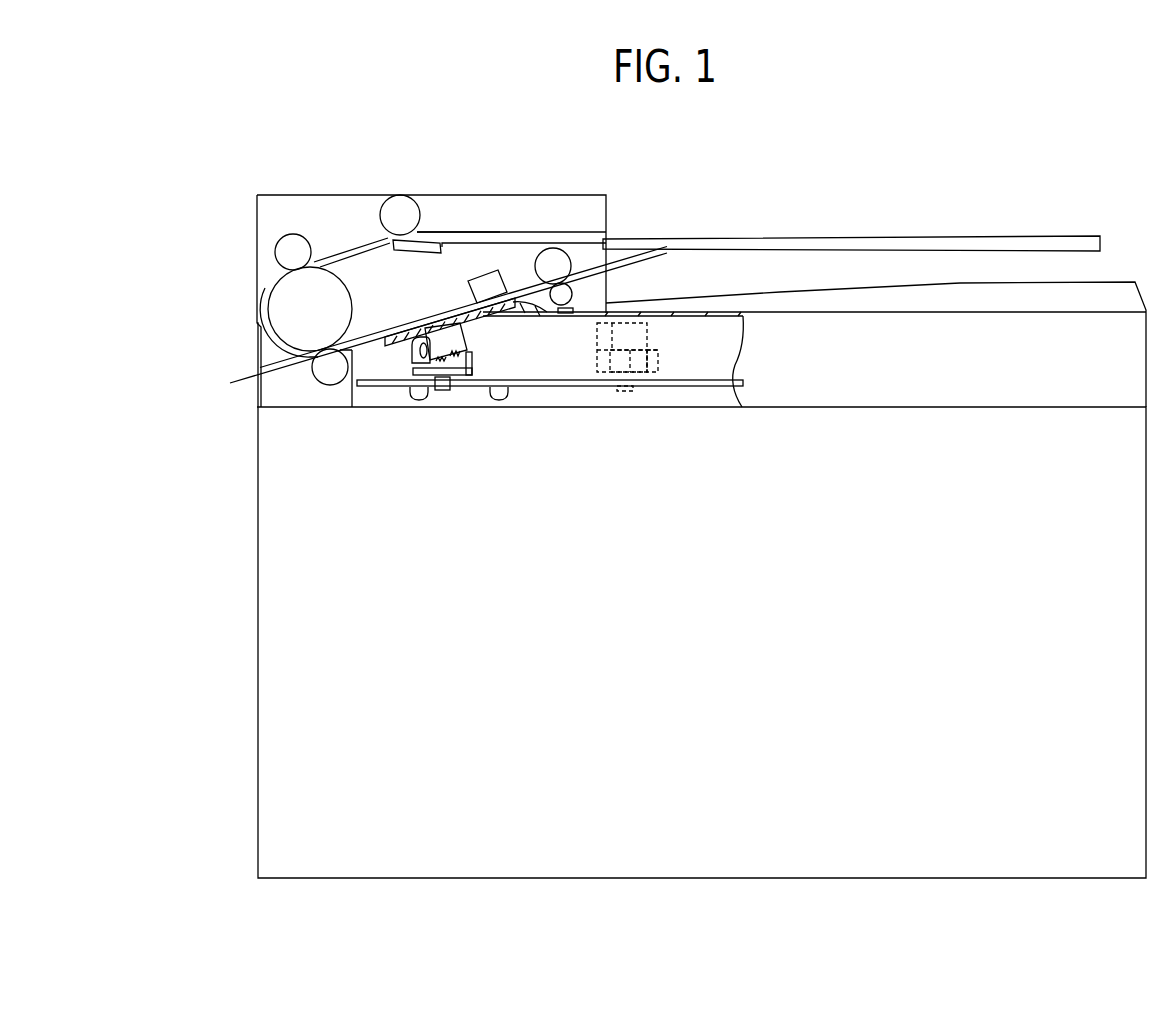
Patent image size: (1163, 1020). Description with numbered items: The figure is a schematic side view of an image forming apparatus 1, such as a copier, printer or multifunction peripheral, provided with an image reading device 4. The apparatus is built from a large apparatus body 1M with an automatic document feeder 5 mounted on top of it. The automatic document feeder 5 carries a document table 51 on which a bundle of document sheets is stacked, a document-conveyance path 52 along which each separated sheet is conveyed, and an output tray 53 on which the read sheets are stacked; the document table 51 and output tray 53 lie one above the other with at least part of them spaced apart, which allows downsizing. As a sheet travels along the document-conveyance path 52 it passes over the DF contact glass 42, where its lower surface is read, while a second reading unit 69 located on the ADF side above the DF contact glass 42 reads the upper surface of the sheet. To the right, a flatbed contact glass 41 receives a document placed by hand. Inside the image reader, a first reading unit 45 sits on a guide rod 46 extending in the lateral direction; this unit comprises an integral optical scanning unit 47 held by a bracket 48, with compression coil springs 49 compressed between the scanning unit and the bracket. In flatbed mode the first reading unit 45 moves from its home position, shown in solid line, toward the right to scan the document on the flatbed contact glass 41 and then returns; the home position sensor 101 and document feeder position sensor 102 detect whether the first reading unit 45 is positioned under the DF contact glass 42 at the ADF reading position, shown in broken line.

The image forming apparatus 1 is at (886, 140).
The apparatus body 1M is at (257, 600).
The image reading device 4 is at (243, 318).
The automatic document feeder 5 is at (332, 228).
The flatbed contact glass 41 is at (722, 316).
The DF contact glass 42 is at (413, 337).
The first reading unit 45 is at (409, 351).
The guide rod 46 is at (710, 380).
The integral optical scanning unit 47 is at (462, 330).
The bracket 48 is at (478, 357).
The compression coil springs 49 is at (472, 362).
The document table 51 is at (948, 236).
The document-conveyance path 52 is at (463, 234).
The output tray 53 is at (1113, 281).
The second reading unit 69 is at (483, 279).
The home position sensor 101 is at (501, 401).
The document feeder position sensor 102 is at (422, 401).